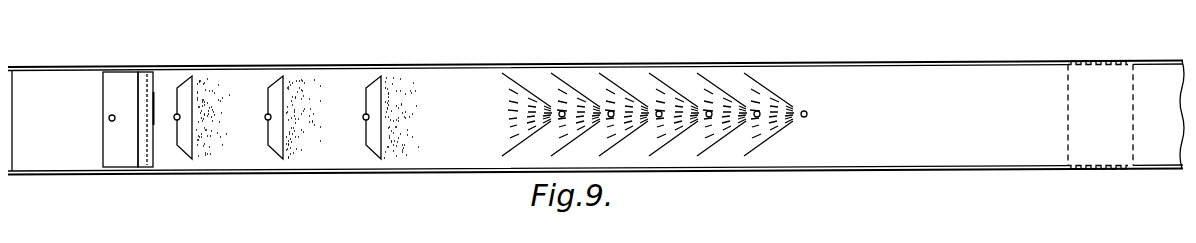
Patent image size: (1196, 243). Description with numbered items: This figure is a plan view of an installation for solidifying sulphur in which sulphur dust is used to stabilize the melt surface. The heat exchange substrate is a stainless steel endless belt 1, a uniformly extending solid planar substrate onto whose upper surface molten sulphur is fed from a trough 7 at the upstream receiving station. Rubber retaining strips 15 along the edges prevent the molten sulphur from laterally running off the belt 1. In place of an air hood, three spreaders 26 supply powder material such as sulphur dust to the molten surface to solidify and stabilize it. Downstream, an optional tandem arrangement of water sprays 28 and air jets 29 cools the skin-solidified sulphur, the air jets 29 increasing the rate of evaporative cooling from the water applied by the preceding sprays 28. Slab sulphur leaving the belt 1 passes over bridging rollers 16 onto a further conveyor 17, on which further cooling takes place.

The stainless steel endless belt 1 is at (43, 127).
The trough 7 is at (122, 80).
The rubber retaining strips 15 is at (47, 67).
The bridging rollers 16 is at (1107, 58).
The further conveyor 17 is at (50, 173).
The spreaders 26 is at (183, 86).
The water sprays 28 is at (562, 111).
The air jets 29 is at (611, 111).